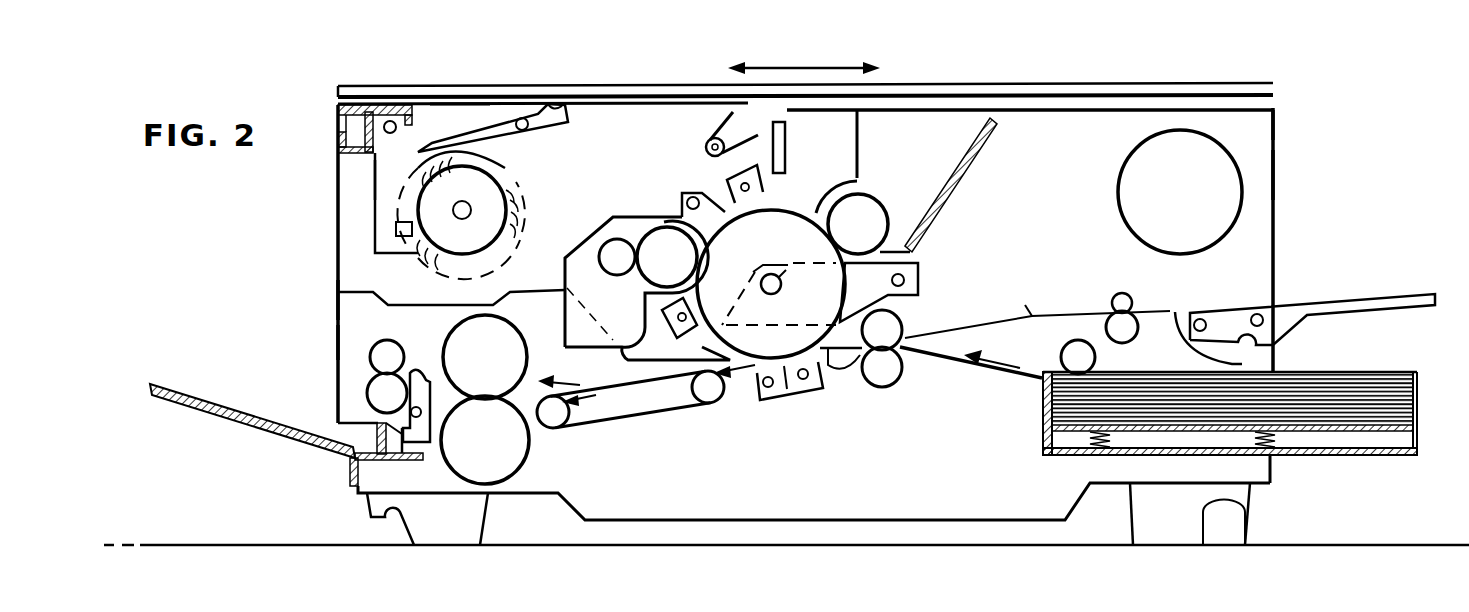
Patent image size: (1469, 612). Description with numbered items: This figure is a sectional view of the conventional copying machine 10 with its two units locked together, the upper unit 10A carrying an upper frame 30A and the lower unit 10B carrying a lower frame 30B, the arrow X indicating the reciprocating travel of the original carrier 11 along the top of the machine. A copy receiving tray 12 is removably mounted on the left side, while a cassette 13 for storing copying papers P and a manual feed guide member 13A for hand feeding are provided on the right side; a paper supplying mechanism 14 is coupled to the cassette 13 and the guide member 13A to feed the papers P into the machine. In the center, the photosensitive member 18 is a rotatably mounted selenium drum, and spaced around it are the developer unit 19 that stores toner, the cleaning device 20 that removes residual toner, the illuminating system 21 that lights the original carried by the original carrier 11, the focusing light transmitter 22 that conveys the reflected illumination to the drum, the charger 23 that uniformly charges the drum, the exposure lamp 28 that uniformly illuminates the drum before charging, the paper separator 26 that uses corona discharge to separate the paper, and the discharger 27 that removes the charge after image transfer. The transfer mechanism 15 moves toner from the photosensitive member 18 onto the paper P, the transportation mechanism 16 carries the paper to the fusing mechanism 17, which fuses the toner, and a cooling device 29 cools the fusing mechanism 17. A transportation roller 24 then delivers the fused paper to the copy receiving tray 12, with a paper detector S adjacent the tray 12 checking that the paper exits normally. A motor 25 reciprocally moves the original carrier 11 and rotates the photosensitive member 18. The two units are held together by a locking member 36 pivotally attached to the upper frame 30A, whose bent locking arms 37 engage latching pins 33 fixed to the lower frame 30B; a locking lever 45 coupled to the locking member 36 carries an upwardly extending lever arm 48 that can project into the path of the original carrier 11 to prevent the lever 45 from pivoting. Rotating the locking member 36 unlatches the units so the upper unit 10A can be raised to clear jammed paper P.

The copying machine 10 is at (1072, 78).
The upper unit 10A is at (1284, 175).
The lower unit 10B is at (328, 300).
The original carrier 11 is at (620, 85).
The copy receiving tray 12 is at (240, 423).
The cassette 13 is at (1362, 455).
The manual feed guide member 13A is at (1345, 300).
The paper supplying mechanism 14 is at (1115, 316).
The transfer mechanism 15 is at (805, 390).
The transportation mechanism 16 is at (606, 424).
The fusing mechanism 17 is at (502, 468).
The photosensitive member 18 is at (781, 241).
The developer unit 19 is at (928, 190).
The cleaning device 20 is at (565, 272).
The illuminating system 21 is at (706, 143).
The focusing light transmitter 22 is at (788, 132).
The charger 23 is at (755, 187).
The transportation roller 24 is at (372, 385).
The motor 25 is at (1232, 206).
The paper separator 26 is at (770, 392).
The discharger 27 is at (672, 340).
The exposure lamp 28 is at (676, 205).
The cooling device 29 is at (500, 190).
The upper frame 30A is at (1284, 124).
The lower frame 30B is at (328, 337).
The latching pin 33 is at (398, 229).
The locking member 36 is at (457, 112).
The locking arm 37 is at (380, 177).
The locking lever 45 is at (535, 109).
The lever arm 48 is at (557, 104).
The copying paper P is at (1397, 388).
The paper detector S is at (413, 443).
The direction X is at (804, 56).